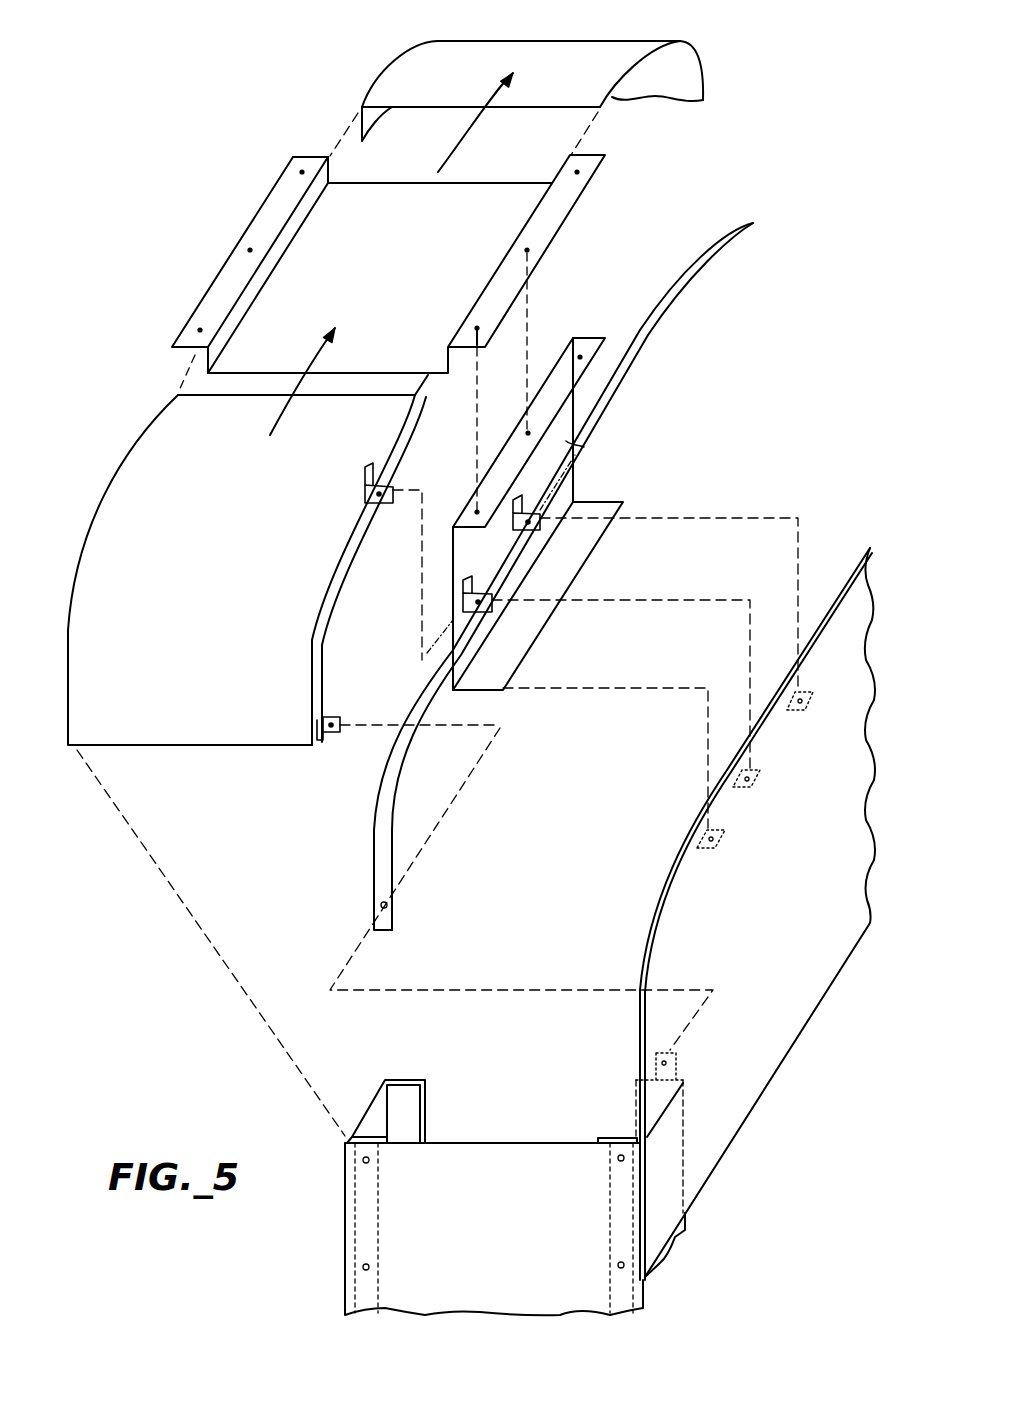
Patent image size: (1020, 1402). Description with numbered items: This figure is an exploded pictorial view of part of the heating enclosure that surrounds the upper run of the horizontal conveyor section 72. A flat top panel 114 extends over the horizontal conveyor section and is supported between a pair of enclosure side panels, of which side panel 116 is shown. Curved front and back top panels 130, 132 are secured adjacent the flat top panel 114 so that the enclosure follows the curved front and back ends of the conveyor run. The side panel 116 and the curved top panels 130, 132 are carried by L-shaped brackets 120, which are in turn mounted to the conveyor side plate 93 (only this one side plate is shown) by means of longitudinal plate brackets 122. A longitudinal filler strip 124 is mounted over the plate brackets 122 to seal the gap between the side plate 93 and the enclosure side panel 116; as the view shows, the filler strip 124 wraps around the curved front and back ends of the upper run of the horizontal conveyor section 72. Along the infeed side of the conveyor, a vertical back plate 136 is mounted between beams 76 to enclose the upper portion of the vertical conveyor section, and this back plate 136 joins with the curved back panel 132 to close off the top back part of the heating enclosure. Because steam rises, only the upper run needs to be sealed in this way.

The horizontal conveyor section 72 is at (316, 143).
The curved front top panel 130 is at (585, 43).
The top panel 114 is at (310, 268).
The curved back top panel 132 is at (155, 478).
The L-shaped bracket 120 is at (380, 483).
The longitudinal filler strip 124 is at (653, 323).
The side panel 116 is at (548, 632).
The longitudinal plate bracket 122 is at (762, 778).
The side plate 93 is at (802, 1042).
The beam 76 is at (358, 1135).
The vertical back plate 136 is at (395, 1223).